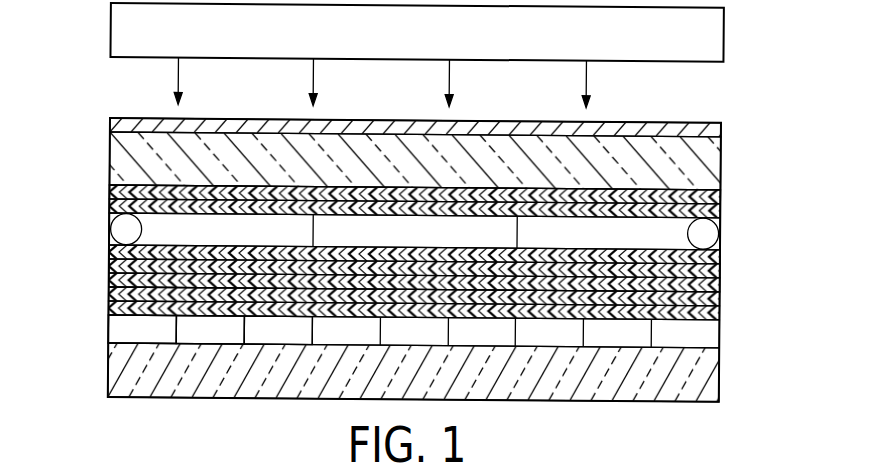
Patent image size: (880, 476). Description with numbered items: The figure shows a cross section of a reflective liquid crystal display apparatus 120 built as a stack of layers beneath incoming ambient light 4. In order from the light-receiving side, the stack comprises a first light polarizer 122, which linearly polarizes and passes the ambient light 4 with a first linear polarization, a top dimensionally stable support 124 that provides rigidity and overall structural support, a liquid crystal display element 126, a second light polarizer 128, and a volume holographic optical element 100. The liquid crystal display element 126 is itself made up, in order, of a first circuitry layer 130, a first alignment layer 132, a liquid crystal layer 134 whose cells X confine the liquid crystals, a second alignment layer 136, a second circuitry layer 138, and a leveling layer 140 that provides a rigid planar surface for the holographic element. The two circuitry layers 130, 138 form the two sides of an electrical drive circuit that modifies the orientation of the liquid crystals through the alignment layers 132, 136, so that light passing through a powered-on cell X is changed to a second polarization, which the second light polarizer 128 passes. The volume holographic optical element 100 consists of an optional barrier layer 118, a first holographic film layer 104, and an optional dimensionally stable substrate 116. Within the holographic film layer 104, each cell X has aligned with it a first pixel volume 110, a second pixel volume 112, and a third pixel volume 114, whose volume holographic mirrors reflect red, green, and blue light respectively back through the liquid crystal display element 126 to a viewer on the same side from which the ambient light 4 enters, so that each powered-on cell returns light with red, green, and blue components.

The ambient light 4 is at (723, 30).
The reflective liquid crystal display apparatus 120 is at (678, 111).
The first light polarizer 122 is at (722, 126).
The first dimensionally stable support 124 is at (722, 156).
The liquid crystal display element 126 is at (723, 187).
The first circuitry layer 130 is at (108, 190).
The first alignment layer 132 is at (108, 205).
The liquid crystal layer 134 is at (97, 229).
The second alignment layer 136 is at (108, 252).
The second circuitry layer 138 is at (108, 266).
The leveling layer 140 is at (108, 281).
The second light polarizer 128 is at (722, 297).
The barrier layer 118 is at (722, 308).
The volume holographic optical element 100 is at (105, 302).
The first holographic film layer 104 is at (722, 337).
The first pixel volume 110 is at (153, 344).
The second pixel volume 112 is at (225, 344).
The third pixel volume 114 is at (300, 344).
The dimensionally stable substrate 116 is at (722, 373).